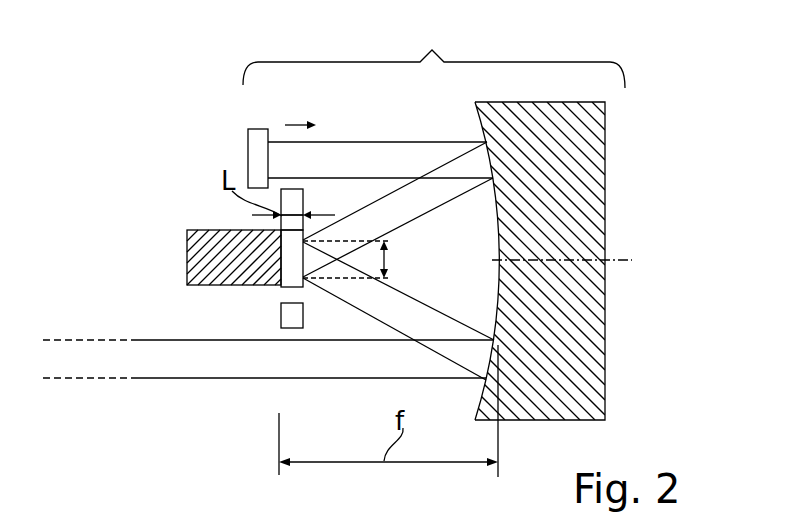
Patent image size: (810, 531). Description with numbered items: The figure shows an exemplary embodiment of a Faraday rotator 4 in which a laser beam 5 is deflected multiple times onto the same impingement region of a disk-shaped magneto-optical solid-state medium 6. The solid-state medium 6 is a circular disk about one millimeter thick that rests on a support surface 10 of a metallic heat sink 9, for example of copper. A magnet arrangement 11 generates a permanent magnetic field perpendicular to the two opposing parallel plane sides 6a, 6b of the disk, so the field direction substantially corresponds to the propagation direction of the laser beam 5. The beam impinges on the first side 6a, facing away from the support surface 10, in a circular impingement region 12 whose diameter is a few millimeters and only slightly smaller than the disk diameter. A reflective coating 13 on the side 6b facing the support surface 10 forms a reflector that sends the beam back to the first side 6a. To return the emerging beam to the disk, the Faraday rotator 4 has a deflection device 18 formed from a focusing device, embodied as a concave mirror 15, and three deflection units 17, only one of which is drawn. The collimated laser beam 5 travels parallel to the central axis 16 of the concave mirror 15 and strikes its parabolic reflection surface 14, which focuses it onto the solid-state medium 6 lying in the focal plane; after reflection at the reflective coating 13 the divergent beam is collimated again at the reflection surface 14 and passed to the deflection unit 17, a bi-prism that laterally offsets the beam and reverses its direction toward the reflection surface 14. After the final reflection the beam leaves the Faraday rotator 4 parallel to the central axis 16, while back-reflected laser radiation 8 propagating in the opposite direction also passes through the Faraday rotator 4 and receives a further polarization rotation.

The Faraday rotator 4 is at (661, 230).
The laser beam 5 is at (165, 380).
The disk-shaped magneto-optical solid-state medium 6 is at (288, 282).
The first side 6a is at (318, 241).
The second side 6b is at (320, 280).
The back-reflected laser radiation 8 is at (287, 121).
The heat sink 9 is at (203, 258).
The support surface 10 is at (270, 262).
The magnet arrangement 11 is at (292, 203).
The impingement region 12 is at (390, 258).
The reflective coating 13 is at (282, 276).
The reflection surface 14 is at (476, 125).
The concave mirror 15 is at (609, 207).
The central axis 16 is at (617, 262).
The deflection unit 17 is at (258, 148).
The deflection device 18 is at (434, 53).